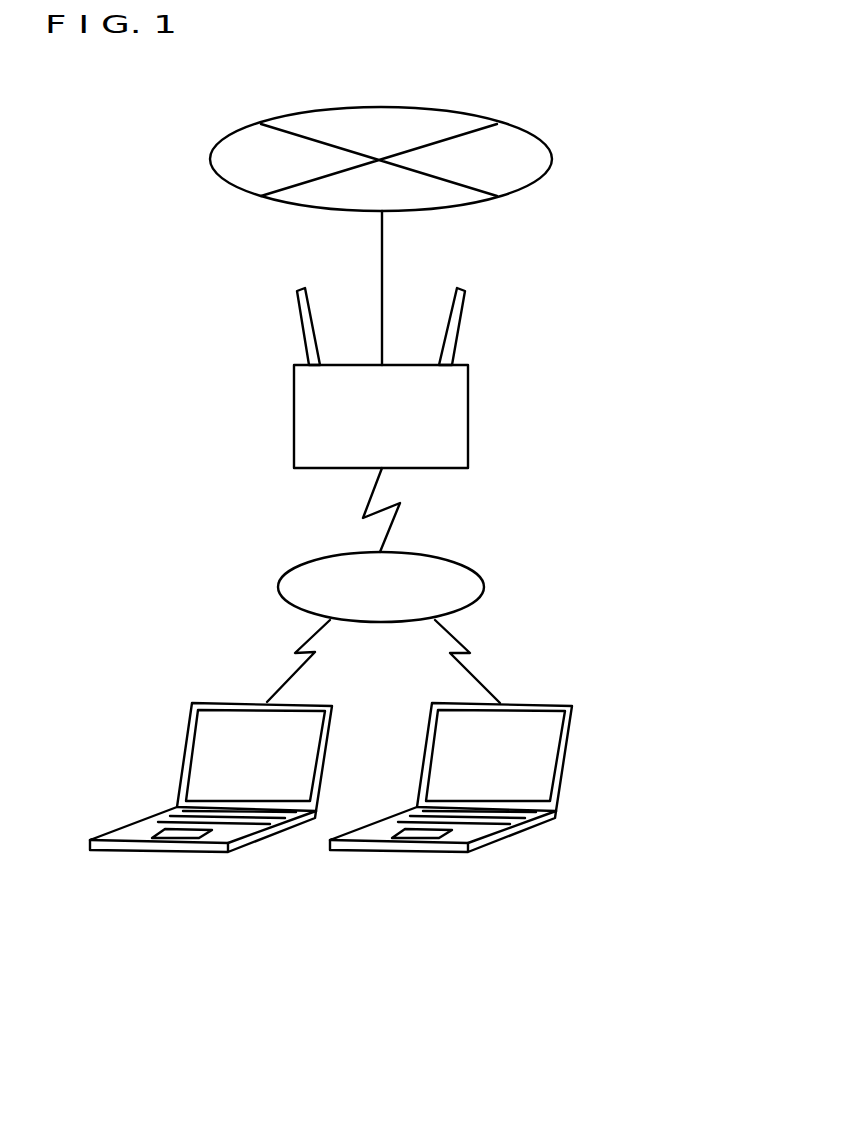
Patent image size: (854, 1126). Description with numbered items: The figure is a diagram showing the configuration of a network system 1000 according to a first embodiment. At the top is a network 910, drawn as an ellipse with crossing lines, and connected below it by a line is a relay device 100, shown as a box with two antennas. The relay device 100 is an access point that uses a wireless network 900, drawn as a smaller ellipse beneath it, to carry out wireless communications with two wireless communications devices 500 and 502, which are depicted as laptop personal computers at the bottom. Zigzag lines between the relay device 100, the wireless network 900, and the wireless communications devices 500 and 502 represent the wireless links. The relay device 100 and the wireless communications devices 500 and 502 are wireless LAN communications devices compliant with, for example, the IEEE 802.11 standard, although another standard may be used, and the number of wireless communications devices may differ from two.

The network system 1000 is at (637, 896).
The network 910 is at (430, 212).
The relay device 100 is at (432, 468).
The wireless network 900 is at (278, 590).
The wireless communications device 500 is at (160, 853).
The wireless communications device 502 is at (418, 853).